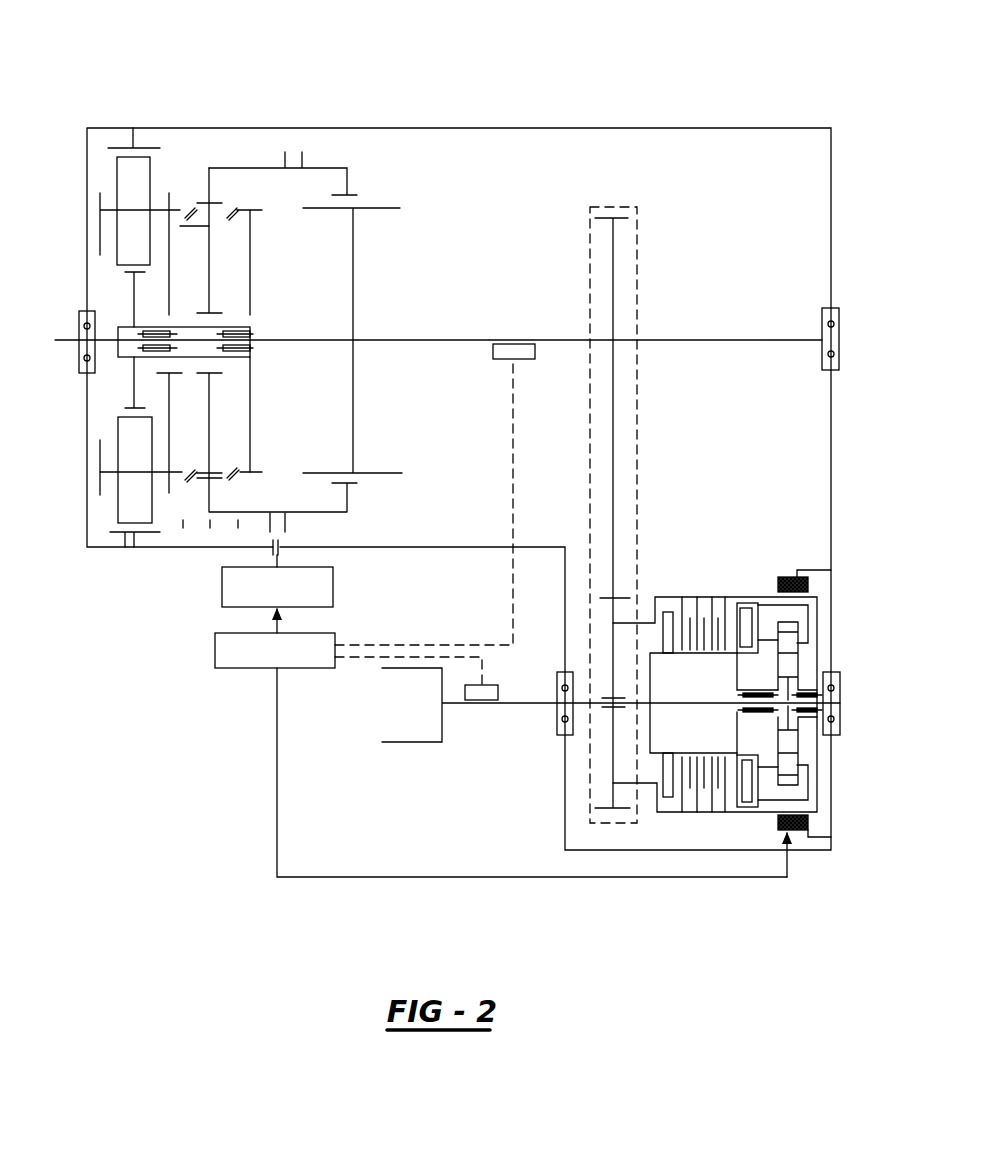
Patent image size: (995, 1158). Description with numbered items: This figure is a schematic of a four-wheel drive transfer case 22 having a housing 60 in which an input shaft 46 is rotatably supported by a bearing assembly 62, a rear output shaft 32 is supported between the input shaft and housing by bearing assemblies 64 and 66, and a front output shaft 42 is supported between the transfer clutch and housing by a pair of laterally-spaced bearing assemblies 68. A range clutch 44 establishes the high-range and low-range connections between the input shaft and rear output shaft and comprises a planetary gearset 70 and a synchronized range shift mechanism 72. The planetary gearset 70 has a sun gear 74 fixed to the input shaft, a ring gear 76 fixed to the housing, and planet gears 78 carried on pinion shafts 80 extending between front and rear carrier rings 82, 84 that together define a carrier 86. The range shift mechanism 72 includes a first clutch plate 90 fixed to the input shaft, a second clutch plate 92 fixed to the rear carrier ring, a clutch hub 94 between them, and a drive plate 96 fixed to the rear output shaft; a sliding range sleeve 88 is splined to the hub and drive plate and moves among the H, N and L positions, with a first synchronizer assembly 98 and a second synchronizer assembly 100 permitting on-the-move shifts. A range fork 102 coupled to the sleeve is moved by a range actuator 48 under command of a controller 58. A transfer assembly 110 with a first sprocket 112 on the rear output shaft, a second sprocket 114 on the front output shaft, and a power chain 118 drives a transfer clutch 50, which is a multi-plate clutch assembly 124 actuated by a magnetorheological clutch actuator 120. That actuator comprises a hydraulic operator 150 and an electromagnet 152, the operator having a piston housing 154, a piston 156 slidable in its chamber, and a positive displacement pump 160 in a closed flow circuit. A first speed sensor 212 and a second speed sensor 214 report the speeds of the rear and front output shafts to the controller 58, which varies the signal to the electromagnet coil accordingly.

The transfer case 22 is at (491, 45).
The rear output shaft 32 is at (702, 340).
The front output shaft 42 is at (527, 705).
The range clutch 44 is at (183, 143).
The input shaft 46 is at (62, 340).
The range actuator 48 is at (228, 582).
The transfer clutch 50 is at (712, 577).
The controller 58 is at (220, 662).
The housing 60 is at (593, 127).
The bearing assembly 62 is at (85, 372).
The bearing assembly 64 is at (247, 333).
The bearing assembly 66 is at (822, 316).
The bearing assemblies 68 is at (563, 672).
The planetary gearset 70 is at (103, 512).
The synchronized range shift mechanism 72 is at (272, 228).
The sun gear 74 is at (133, 308).
The ring gear 76 is at (133, 140).
The planet gears 78 is at (125, 172).
The pinion shafts 80 is at (157, 462).
The front carrier ring 82 is at (99, 222).
The rear carrier ring 84 is at (170, 258).
The carrier 86 is at (98, 473).
The range sleeve 88 is at (249, 168).
The first clutch plate 90 is at (250, 402).
The second clutch plate 92 is at (170, 199).
The clutch hub 94 is at (210, 258).
The drive plate 96 is at (353, 393).
The first synchronizer assembly 98 is at (235, 455).
The second synchronizer assembly 100 is at (183, 460).
The range fork 102 is at (282, 535).
The transfer assembly 110 is at (712, 440).
The first sprocket 112 is at (612, 260).
The second sprocket 114 is at (610, 757).
The power chain 118 is at (637, 503).
The magnetorheological clutch actuator 120 is at (775, 557).
The multi-plate clutch assembly 124 is at (690, 595).
The hydraulic operator 150 is at (818, 605).
The electromagnet 152 is at (782, 573).
The piston housing 154 is at (752, 735).
The piston 156 is at (747, 790).
The positive displacement pump 160 is at (793, 665).
The first speed sensor 212 is at (502, 355).
The second speed sensor 214 is at (490, 690).